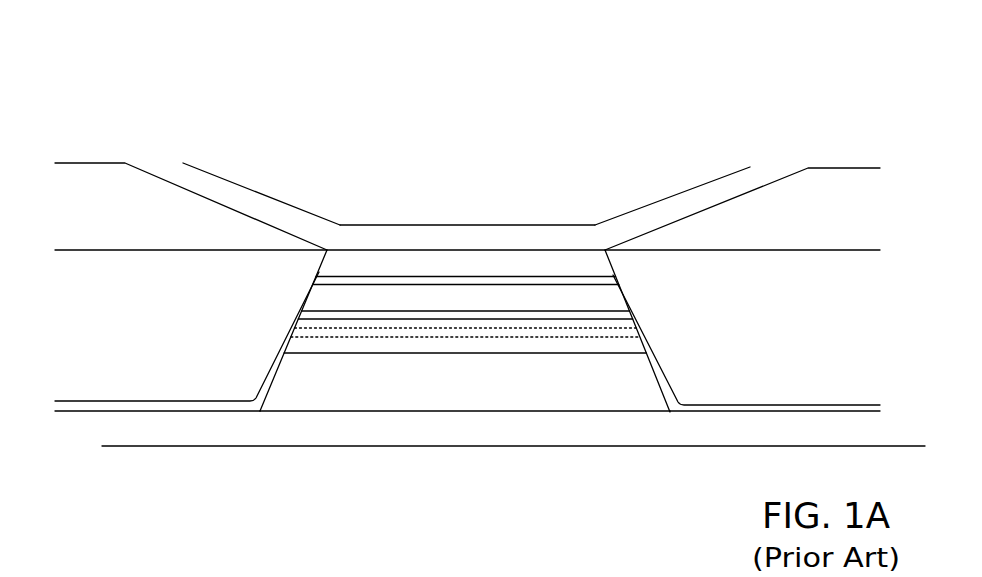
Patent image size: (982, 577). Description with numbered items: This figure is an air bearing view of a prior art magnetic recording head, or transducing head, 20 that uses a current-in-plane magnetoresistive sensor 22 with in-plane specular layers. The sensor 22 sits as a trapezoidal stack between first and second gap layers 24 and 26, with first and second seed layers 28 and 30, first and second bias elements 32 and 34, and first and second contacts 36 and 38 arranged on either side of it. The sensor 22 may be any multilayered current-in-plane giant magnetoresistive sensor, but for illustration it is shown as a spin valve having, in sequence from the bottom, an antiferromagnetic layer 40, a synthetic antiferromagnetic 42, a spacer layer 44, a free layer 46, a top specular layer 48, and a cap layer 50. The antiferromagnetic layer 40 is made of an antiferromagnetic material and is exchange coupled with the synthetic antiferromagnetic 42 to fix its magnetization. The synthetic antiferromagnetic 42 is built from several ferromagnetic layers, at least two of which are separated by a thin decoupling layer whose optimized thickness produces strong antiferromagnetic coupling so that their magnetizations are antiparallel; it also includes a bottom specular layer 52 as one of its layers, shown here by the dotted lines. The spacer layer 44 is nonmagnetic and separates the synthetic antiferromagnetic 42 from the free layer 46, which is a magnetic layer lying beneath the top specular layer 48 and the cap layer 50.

The magnetic recording head 20 is at (813, 92).
The current-in-plane magnetoresistive sensor 22 is at (738, 298).
The first gap layer 24 is at (278, 418).
The second gap layer 26 is at (347, 242).
The first seed layer 28 is at (193, 405).
The second seed layer 30 is at (707, 408).
The first bias element 32 is at (158, 380).
The second bias element 34 is at (743, 391).
The first contact 36 is at (160, 228).
The second contact 38 is at (742, 230).
The antiferromagnetic layer 40 is at (385, 393).
The synthetic antiferromagnetic 42 is at (455, 340).
The spacer layer 44 is at (570, 313).
The free layer 46 is at (390, 302).
The top specular layer 48 is at (460, 280).
The cap layer 50 is at (535, 258).
The bottom specular layer 52 is at (502, 332).